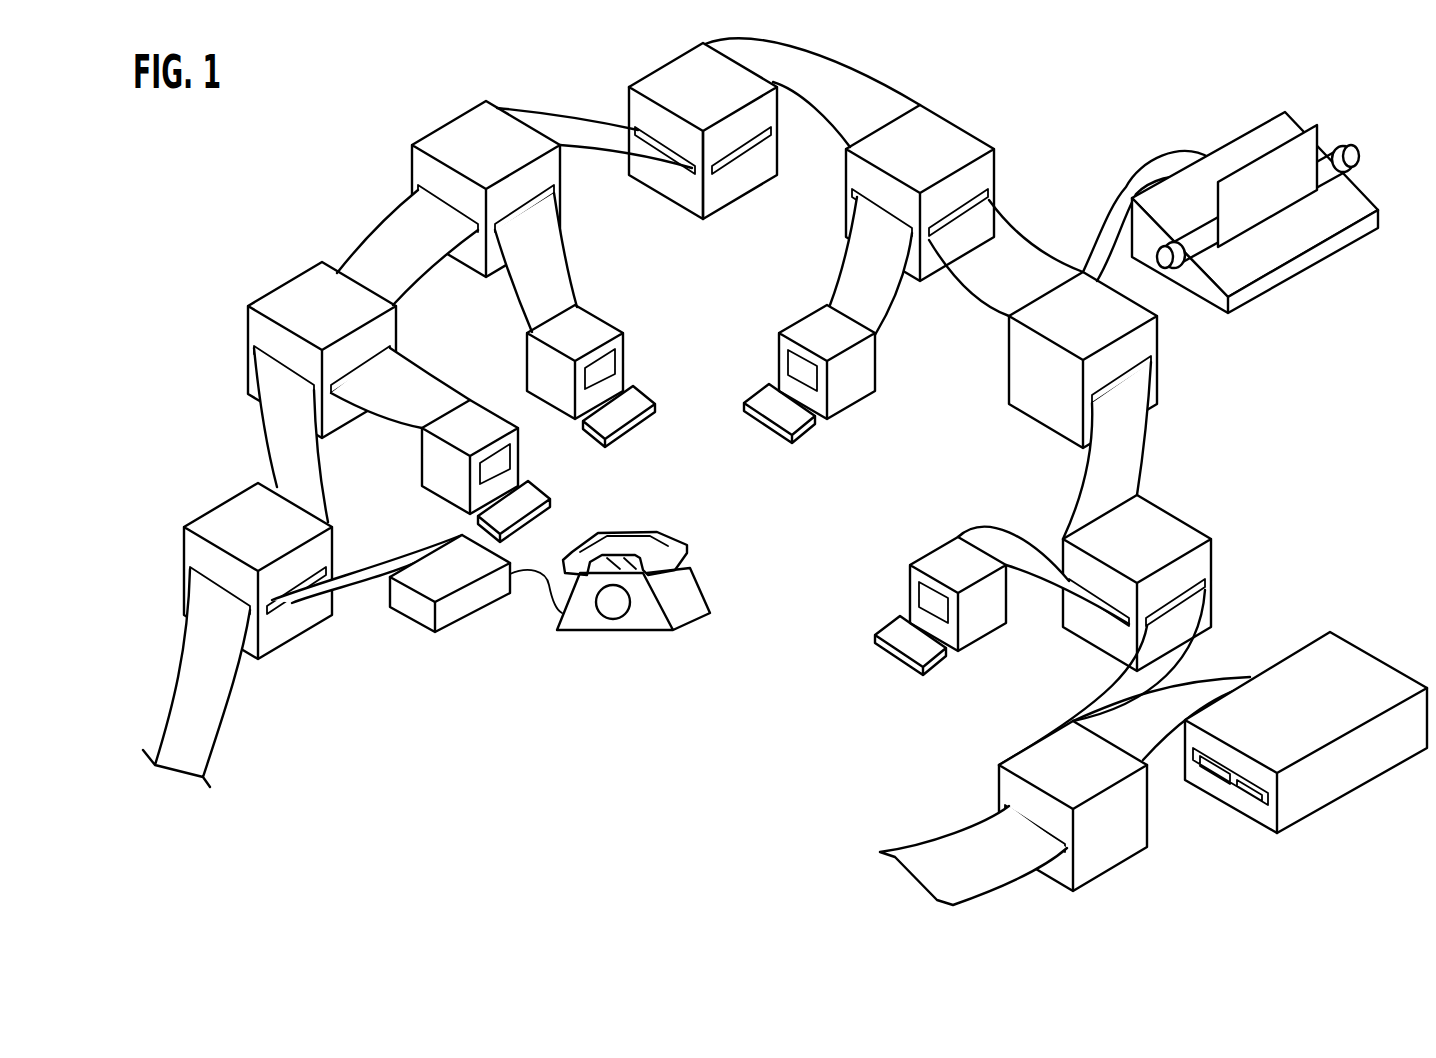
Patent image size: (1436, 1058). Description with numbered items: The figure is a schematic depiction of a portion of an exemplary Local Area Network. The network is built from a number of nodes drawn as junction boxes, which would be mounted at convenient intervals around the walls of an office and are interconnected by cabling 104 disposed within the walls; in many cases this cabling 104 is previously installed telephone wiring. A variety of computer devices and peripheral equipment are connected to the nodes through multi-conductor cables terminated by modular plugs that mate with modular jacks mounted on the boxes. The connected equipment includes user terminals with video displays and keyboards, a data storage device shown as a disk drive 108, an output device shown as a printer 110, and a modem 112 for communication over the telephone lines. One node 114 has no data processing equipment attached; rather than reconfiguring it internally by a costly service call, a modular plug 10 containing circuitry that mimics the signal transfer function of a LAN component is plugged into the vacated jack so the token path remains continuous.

The modular plug 10 is at (777, 130).
The cabling 104 is at (380, 247).
The disk drive 108 is at (1360, 660).
The printer 110 is at (1350, 240).
The modem 112 is at (408, 610).
The node 114 is at (747, 194).